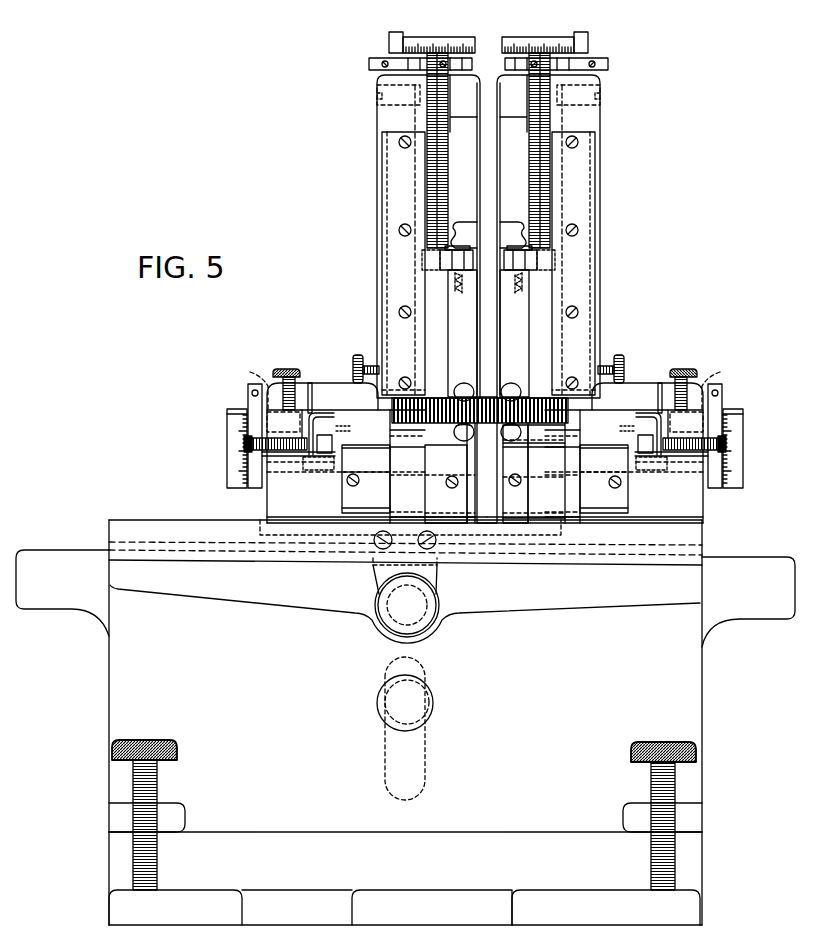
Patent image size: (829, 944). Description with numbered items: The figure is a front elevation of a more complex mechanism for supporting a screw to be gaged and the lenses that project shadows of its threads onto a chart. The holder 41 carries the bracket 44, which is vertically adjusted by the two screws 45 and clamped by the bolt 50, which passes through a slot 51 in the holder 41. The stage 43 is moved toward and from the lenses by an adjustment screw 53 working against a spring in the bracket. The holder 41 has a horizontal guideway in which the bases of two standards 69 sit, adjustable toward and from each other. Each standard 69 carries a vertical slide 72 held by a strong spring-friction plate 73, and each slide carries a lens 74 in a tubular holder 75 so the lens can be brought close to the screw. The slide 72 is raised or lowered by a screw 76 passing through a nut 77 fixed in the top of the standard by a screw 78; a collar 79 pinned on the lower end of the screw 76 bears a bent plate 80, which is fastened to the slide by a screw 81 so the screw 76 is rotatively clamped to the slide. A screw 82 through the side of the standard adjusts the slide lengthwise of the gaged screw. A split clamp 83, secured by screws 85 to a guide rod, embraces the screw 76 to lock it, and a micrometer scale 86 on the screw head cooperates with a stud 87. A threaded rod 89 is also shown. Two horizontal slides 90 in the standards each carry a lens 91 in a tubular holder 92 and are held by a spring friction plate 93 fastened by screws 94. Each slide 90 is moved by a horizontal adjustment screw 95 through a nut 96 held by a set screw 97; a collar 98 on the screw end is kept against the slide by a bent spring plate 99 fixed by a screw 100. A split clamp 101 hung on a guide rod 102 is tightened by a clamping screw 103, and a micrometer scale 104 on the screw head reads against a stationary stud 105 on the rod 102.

The holder 41 is at (692, 867).
The stage 43 is at (173, 521).
The bracket 44 is at (703, 670).
The screws 45 is at (172, 740).
The bolt 50 is at (434, 703).
The slot 51 is at (426, 758).
The adjustment screw 53 is at (440, 599).
The standards 69 is at (377, 123).
The vertical slide 72 is at (488, 333).
The spring-friction plate 73 is at (382, 280).
The lens 74 is at (468, 375).
The tubular holder 75 is at (487, 397).
The screw 76 is at (428, 157).
The nut 77 is at (488, 103).
The screw 78 is at (378, 109).
The collar 79 is at (422, 262).
The bent plate 80 is at (474, 224).
The screw 81 is at (464, 293).
The screw 82 is at (360, 355).
The split clamp 83 is at (369, 64).
The screws 85 is at (385, 61).
The micrometer scale 86 is at (450, 37).
The stud 87 is at (395, 32).
The threaded rod 89 is at (480, 410).
The horizontal slides 90 is at (485, 453).
The lens 91 is at (461, 441).
The tubular holder 92 is at (456, 429).
The spring friction plate 93 is at (342, 503).
The screws 94 is at (355, 486).
The adjustment screw 95 is at (277, 467).
The nut 96 is at (276, 418).
The set screw 97 is at (302, 356).
The collar 98 is at (325, 470).
The bent spring plate 99 is at (323, 415).
The screw 100 is at (312, 410).
The split clamp 101 is at (248, 390).
The guide rod 102 is at (266, 378).
The clamping screw 103 is at (244, 452).
The micrometer scale 104 is at (227, 448).
The stationary stud 105 is at (227, 416).